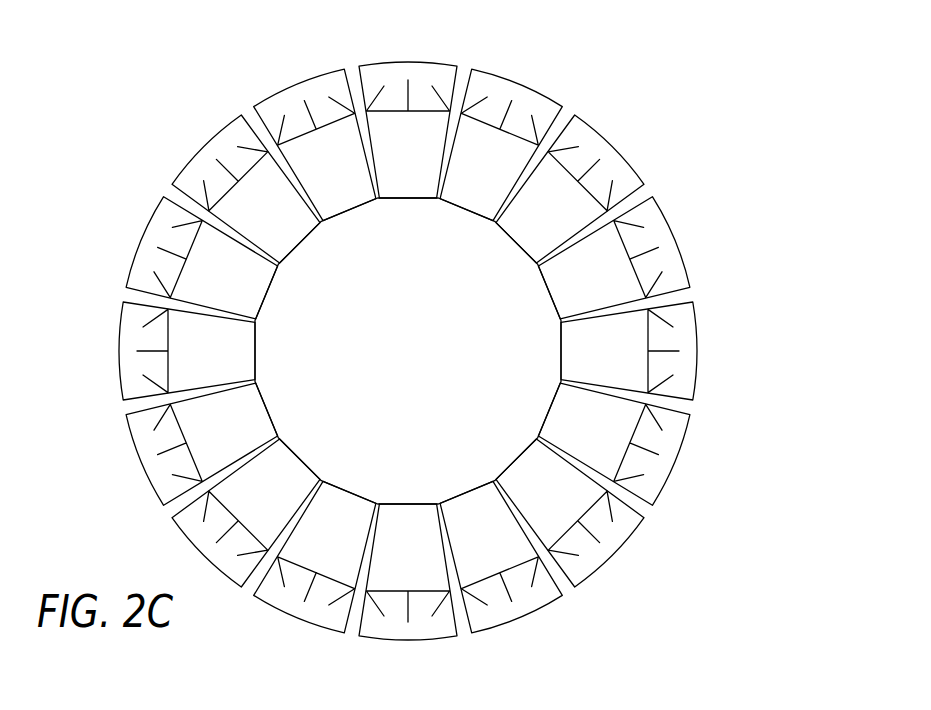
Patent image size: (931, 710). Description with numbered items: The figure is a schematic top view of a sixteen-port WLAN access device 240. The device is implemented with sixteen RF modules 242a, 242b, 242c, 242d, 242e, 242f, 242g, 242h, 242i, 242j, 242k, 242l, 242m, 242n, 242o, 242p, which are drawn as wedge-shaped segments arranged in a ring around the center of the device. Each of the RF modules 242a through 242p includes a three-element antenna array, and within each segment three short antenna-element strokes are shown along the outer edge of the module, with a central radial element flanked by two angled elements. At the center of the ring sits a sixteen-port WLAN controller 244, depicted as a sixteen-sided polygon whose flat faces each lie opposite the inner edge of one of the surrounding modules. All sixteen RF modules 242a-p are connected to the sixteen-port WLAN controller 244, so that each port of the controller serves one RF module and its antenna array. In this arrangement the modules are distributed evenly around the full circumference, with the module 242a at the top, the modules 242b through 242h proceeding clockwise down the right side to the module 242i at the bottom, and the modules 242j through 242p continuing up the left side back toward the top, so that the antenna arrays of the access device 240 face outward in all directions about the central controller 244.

The 16-port WLAN access device 240 is at (570, 53).
The 16-port WLAN controller 244 is at (391, 360).
The RF module 242a is at (384, 168).
The RF module 242b is at (459, 183).
The RF module 242c is at (522, 226).
The RF module 242d is at (564, 289).
The RF module 242e is at (579, 364).
The RF module 242f is at (564, 438).
The RF module 242g is at (522, 501).
The RF module 242h is at (459, 544).
The RF module 242i is at (384, 558).
The RF module 242j is at (309, 544).
The RF module 242k is at (246, 501).
The RF module 242l is at (204, 438).
The RF module 242m is at (189, 364).
The RF module 242n is at (204, 289).
The RF module 242o is at (246, 226).
The RF module 242p is at (309, 183).